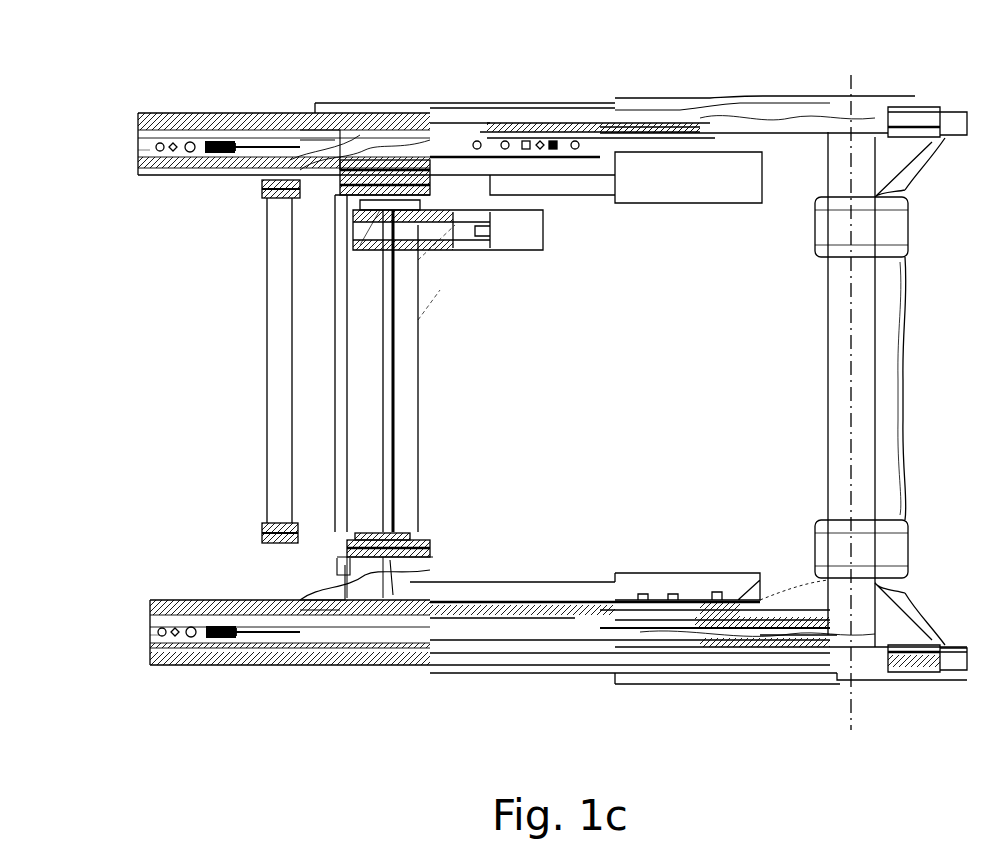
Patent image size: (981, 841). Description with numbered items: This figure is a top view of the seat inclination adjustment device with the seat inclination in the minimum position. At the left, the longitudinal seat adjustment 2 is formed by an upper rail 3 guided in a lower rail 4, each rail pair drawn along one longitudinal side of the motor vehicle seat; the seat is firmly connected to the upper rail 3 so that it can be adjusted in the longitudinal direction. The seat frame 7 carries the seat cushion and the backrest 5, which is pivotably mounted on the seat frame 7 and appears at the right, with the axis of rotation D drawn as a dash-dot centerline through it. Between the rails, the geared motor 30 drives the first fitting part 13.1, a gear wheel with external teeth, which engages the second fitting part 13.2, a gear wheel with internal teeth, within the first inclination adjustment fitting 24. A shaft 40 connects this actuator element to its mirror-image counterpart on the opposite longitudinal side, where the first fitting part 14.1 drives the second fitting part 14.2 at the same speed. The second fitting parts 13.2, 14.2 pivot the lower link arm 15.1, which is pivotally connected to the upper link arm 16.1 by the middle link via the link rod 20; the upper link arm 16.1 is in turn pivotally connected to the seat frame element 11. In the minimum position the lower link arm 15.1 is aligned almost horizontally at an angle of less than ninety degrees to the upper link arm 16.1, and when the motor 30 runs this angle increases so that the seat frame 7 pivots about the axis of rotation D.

The longitudinal seat adjustment 2 is at (100, 158).
The upper rail 3 is at (303, 177).
The lower rail 4 is at (185, 182).
The backrest 5 is at (898, 110).
The seat frame 7 is at (533, 97).
The seat frame element 11 is at (564, 125).
The first fitting part 13.1 is at (375, 195).
The second fitting part 13.2 is at (372, 130).
The first fitting part 14.1 is at (420, 537).
The second fitting part 14.2 is at (405, 563).
The lower link arm 15.1 is at (330, 213).
The upper link arm 16.1 is at (300, 130).
The link rod 20 is at (268, 392).
The first inclination adjustment fitting 24 is at (408, 130).
The geared motor 30 is at (532, 226).
The shaft 40 is at (400, 402).
The axis of rotation D is at (851, 419).